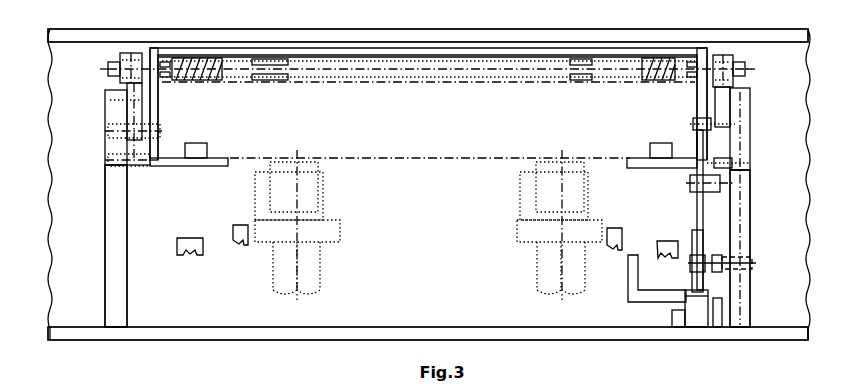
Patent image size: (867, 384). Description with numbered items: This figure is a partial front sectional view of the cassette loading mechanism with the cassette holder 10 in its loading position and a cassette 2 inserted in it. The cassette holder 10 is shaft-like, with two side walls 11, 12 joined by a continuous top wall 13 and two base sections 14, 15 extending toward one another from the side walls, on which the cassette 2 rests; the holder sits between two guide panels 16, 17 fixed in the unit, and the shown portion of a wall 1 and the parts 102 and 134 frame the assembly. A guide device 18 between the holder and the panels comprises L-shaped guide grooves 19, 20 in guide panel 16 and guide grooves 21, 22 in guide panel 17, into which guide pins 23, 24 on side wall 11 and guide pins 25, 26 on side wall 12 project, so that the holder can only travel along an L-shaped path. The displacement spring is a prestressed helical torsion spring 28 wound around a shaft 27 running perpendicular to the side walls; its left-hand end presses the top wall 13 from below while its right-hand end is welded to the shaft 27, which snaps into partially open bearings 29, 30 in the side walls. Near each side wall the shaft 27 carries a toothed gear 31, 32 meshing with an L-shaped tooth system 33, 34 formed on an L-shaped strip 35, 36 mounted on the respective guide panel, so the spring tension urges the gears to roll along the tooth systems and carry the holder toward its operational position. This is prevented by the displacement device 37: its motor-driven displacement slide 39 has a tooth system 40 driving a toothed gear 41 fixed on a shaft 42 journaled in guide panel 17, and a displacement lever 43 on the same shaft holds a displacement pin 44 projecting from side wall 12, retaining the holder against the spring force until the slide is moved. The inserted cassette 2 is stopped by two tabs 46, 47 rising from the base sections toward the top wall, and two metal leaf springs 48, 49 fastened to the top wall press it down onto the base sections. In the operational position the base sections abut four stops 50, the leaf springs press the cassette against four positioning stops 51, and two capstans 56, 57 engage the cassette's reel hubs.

The bottom wall 1 is at (158, 340).
The cassette 2 is at (466, 160).
The cassette holder 10 is at (366, 44).
The side wall 11 is at (158, 88).
The side wall 12 is at (700, 88).
The top wall 13 is at (428, 56).
The base section 14 is at (220, 168).
The base section 15 is at (632, 168).
The guide panel 16 is at (116, 301).
The guide panel 17 is at (748, 310).
The guide device 18 is at (137, 174).
The guide groove 19 is at (118, 232).
The guide groove 20 is at (118, 200).
The guide groove 21 is at (745, 232).
The guide groove 22 is at (742, 205).
The guide pin 23 is at (122, 166).
The guide pin 24 is at (144, 132).
The guide pin 25 is at (732, 166).
The guide pin 26 is at (700, 122).
The shaft 27 is at (327, 58).
The helical torsion spring 28 is at (217, 59).
The bearing 29 is at (168, 58).
The bearing 30 is at (692, 60).
The toothed gear 31 is at (126, 54).
The toothed gear 32 is at (738, 61).
The tooth system 33 is at (140, 53).
The tooth system 34 is at (720, 55).
The L-shaped strip 35 is at (128, 106).
The L-shaped strip 36 is at (728, 96).
The displacement device 37 is at (680, 228).
The displacement slide 39 is at (694, 322).
The tooth system 40 is at (694, 298).
The toothed gear 41 is at (692, 280).
The shaft 42 is at (756, 263).
The displacement lever 43 is at (698, 230).
The displacement pin 44 is at (722, 184).
The tab 46 is at (205, 149).
The tab 47 is at (652, 149).
The leaf spring 48 is at (290, 80).
The leaf spring 49 is at (581, 82).
The stop 50 is at (190, 254).
The positioning stop 51 is at (241, 244).
The capstan 56 is at (312, 194).
The capstan 57 is at (540, 194).
The angle bracket 102 is at (628, 290).
The spacer block 134 is at (720, 304).